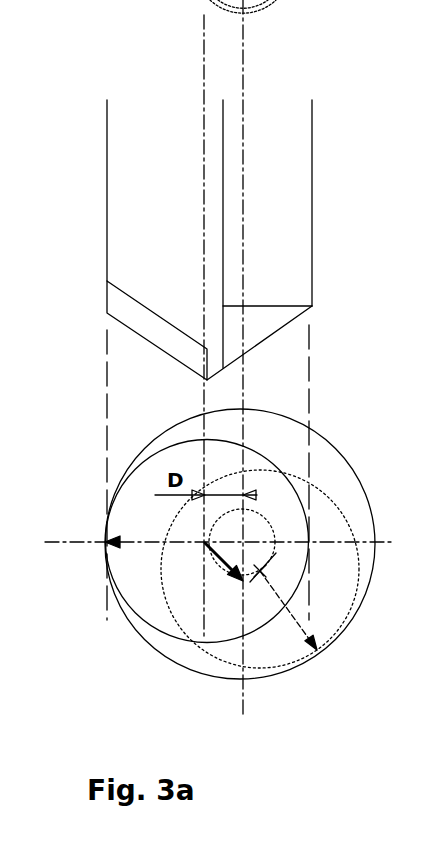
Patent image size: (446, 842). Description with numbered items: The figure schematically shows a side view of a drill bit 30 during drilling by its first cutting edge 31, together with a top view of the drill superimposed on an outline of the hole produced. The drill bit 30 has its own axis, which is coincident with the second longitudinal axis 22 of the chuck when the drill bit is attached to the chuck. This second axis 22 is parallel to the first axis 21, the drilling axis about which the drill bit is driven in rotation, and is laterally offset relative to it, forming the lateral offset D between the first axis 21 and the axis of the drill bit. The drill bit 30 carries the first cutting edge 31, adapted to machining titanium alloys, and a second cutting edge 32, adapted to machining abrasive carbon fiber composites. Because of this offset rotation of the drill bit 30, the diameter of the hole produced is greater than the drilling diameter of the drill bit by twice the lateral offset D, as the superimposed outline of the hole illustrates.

The first axis 21 is at (243, 30).
The second longitudinal axis 22 is at (139, 327).
The drill bit 30 is at (336, 176).
The first cutting edge 31 is at (278, 328).
The second cutting edge 32 is at (137, 337).